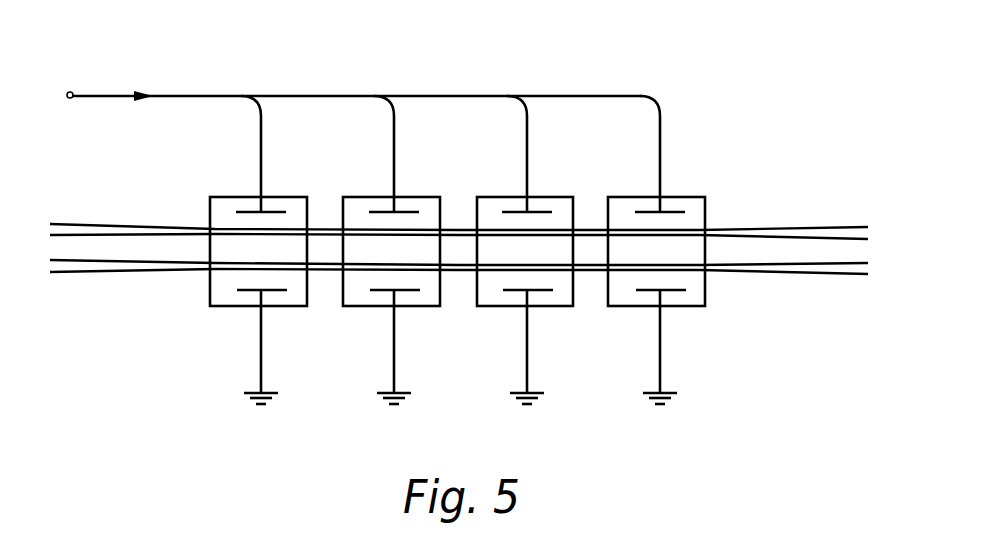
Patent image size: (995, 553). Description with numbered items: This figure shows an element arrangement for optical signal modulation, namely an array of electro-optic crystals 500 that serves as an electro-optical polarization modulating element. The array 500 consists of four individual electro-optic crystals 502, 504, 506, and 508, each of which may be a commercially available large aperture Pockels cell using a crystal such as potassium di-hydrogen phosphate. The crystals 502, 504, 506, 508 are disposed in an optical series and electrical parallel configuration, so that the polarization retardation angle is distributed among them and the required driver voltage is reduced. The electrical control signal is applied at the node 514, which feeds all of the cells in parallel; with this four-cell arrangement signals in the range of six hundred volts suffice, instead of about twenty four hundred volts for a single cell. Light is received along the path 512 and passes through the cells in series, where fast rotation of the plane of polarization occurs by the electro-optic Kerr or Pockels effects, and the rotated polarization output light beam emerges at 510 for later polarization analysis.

The array of electro-optic crystals 500 is at (455, 67).
The electro-optic crystal 502 is at (218, 306).
The electro-optic crystal 504 is at (357, 307).
The electro-optic crystal 506 is at (503, 307).
The electro-optic crystal 508 is at (640, 307).
The rotated polarization output light beam 510 is at (122, 273).
The light input path 512 is at (780, 275).
The node 514 is at (70, 91).